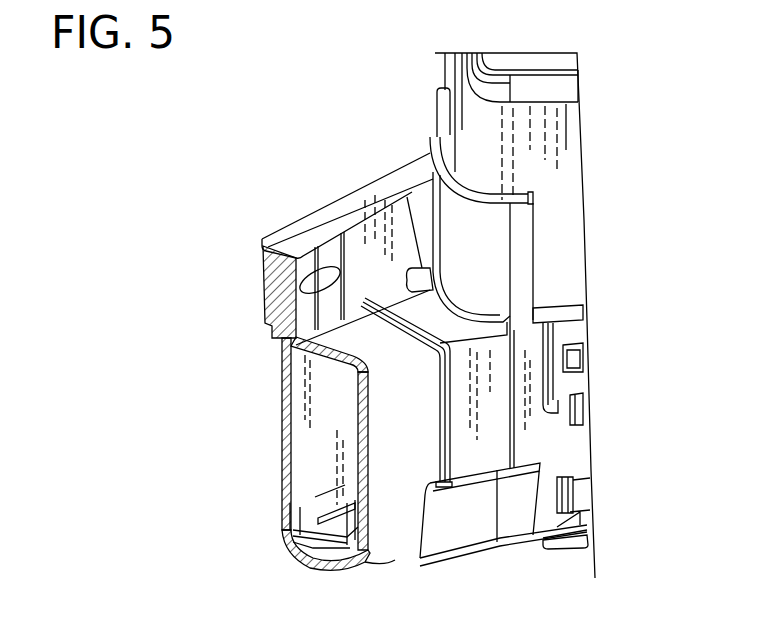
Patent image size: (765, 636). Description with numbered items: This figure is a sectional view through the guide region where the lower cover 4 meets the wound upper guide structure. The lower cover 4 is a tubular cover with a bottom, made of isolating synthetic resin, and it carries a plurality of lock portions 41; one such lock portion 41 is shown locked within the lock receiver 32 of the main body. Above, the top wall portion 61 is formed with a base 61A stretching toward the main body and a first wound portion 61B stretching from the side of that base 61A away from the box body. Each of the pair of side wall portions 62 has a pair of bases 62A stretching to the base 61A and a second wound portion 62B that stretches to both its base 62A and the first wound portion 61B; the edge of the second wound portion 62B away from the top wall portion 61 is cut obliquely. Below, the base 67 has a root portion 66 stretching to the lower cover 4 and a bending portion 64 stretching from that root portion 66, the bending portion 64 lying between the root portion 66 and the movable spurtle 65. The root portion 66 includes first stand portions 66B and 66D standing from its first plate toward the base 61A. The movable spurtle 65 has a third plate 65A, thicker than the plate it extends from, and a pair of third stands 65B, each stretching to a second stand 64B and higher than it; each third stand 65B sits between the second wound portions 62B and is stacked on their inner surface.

The lower cover 4 is at (583, 495).
The lock receiver 32 is at (577, 450).
The lock portion 41 is at (577, 383).
The top wall portion 61 is at (285, 361).
The base 61A is at (350, 350).
The first wound portion 61B is at (345, 368).
The side wall portion 62 is at (459, 312).
The base 62A is at (450, 378).
The second wound portion 62B is at (450, 348).
The bending portion 64 is at (393, 565).
The second stand 64B is at (327, 495).
The movable spurtle 65 is at (247, 518).
The third plate 65A is at (290, 520).
The third stand 65B is at (290, 510).
The root portion 66 is at (516, 531).
The first stand portion 66B is at (330, 503).
The first stand portion 66D is at (475, 528).
The base 67 is at (593, 565).